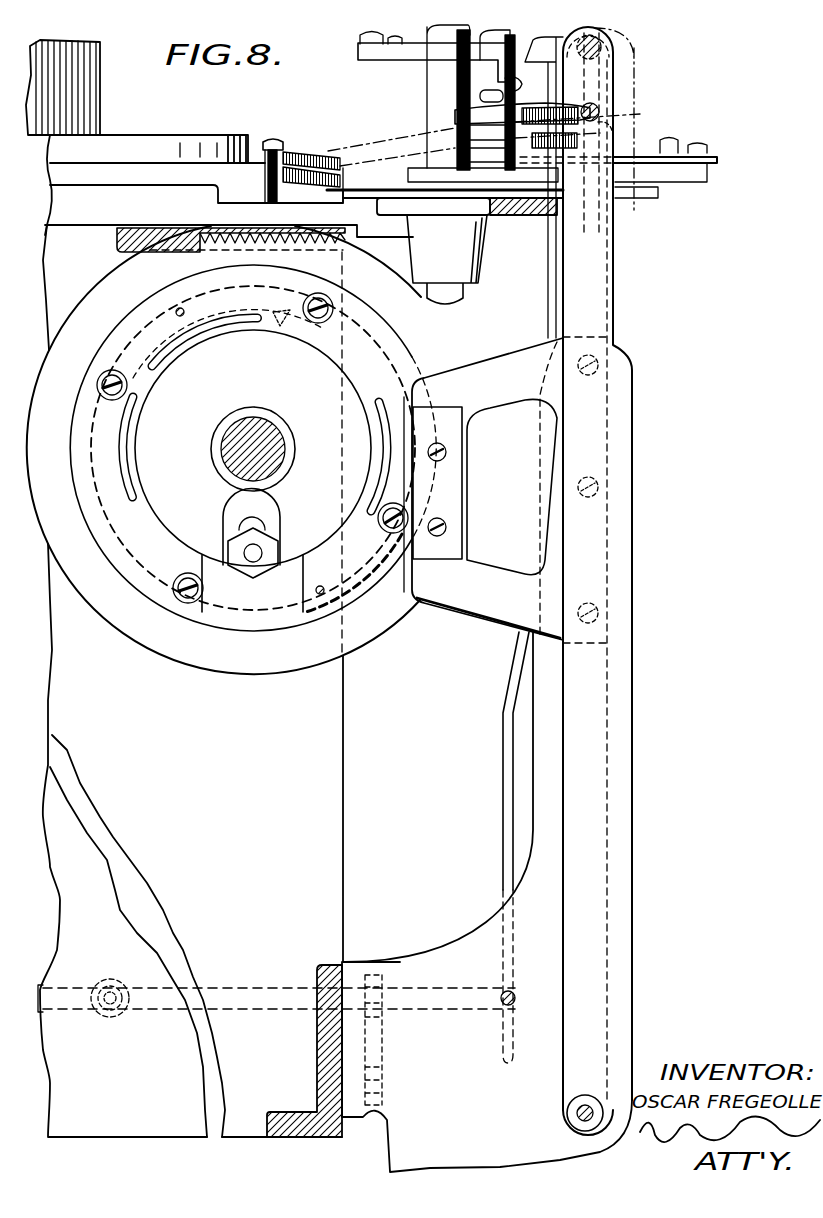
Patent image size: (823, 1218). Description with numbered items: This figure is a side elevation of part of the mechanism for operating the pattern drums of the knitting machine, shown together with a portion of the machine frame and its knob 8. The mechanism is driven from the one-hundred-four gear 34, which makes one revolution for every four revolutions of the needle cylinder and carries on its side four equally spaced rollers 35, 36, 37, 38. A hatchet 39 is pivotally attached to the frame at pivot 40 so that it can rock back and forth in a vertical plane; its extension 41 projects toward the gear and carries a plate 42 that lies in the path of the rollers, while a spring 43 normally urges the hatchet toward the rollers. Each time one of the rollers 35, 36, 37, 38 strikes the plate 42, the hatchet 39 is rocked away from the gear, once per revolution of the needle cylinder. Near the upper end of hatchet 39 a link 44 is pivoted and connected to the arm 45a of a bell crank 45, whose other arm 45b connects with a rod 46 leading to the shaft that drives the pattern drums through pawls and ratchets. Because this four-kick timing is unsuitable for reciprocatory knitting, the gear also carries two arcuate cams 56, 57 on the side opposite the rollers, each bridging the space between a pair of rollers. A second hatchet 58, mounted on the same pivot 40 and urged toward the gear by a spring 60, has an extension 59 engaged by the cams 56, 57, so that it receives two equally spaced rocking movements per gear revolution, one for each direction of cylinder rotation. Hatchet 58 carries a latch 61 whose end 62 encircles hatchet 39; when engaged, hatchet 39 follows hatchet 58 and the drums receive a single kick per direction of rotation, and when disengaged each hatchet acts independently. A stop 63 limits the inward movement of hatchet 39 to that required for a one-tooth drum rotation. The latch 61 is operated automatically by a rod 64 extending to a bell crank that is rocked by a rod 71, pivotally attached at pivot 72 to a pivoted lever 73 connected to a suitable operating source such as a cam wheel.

The knob 8 is at (100, 95).
The 104-gear 34 is at (222, 675).
The roller 35 is at (378, 525).
The roller 36 is at (180, 607).
The roller 37 is at (100, 378).
The roller 38 is at (338, 305).
The hatchet 39 is at (597, 278).
The pivot 40 is at (570, 1120).
The extension 41 is at (505, 360).
The plate 42 is at (448, 502).
The spring 43 is at (322, 178).
The link 44 is at (455, 110).
The bell crank 45 is at (514, 86).
The arm 45a is at (455, 125).
The arm 45b is at (380, 60).
The rod 46 is at (392, 42).
The arcuate cam 56 is at (258, 618).
The arcuate cam 57 is at (282, 315).
The second hatchet 58 is at (560, 264).
The extension 59 is at (420, 601).
The spring 60 is at (330, 148).
The latch 61 is at (718, 160).
The end 62 is at (557, 148).
The stop 63 is at (532, 177).
The rod 64 is at (642, 147).
The rod 71 is at (500, 718).
The pivot 72 is at (518, 1003).
The pivoted lever 73 is at (420, 1008).